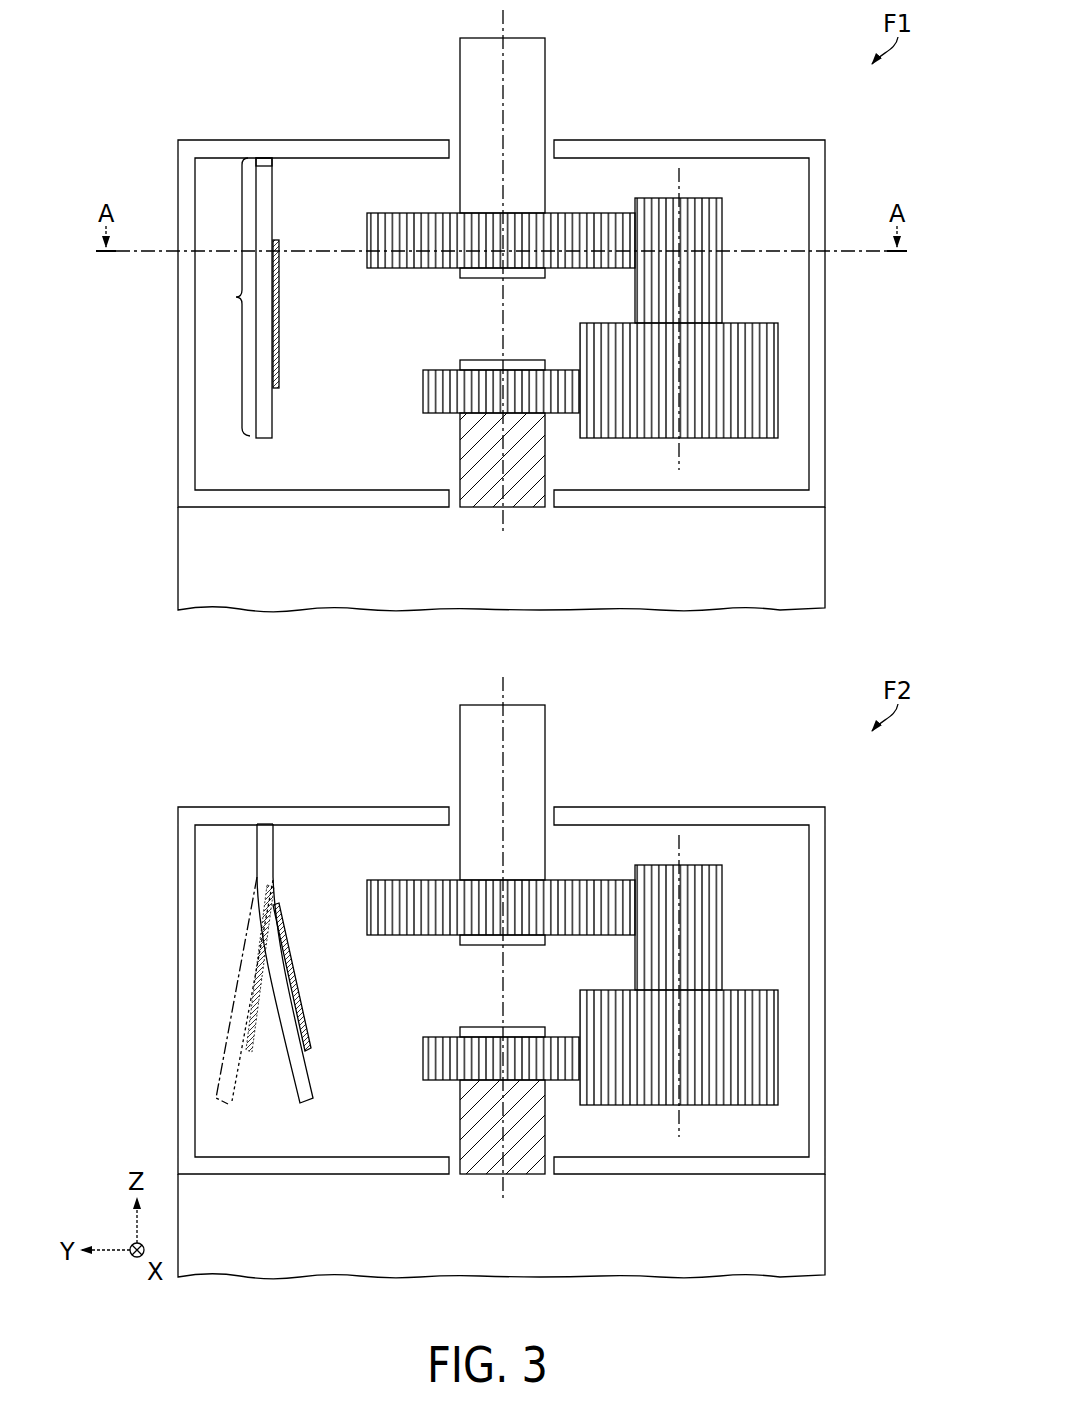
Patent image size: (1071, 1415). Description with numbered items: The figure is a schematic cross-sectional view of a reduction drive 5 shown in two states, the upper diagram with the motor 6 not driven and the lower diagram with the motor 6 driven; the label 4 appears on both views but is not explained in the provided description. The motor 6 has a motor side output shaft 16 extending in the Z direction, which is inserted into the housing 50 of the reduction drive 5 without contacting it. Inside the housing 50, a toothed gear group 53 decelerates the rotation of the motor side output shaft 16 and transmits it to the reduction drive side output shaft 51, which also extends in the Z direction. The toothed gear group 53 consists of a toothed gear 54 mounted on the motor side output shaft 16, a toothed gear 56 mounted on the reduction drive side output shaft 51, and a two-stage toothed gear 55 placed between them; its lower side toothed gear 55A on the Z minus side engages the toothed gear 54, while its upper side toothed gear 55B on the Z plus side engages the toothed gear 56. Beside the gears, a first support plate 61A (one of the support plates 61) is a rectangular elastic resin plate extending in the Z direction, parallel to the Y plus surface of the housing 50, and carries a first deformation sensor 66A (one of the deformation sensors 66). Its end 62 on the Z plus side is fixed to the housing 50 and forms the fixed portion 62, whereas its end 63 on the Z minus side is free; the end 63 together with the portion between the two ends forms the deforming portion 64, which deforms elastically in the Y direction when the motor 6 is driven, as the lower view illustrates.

The drive unit 4 is at (818, 118).
The reduction drive 5 is at (822, 188).
The motor 6 is at (822, 557).
The motor side output shaft 16 is at (460, 438).
The housing 50 is at (632, 146).
The reduction drive side output shaft 51 is at (460, 62).
The toothed gear group 53 is at (723, 182).
The toothed gear 54 is at (423, 380).
The two-stage toothed gear 55 is at (749, 651).
The lower side toothed gear 55A is at (679, 714).
The upper side toothed gear 55B is at (678, 594).
The toothed gear 56 is at (367, 218).
The contact member 61 is at (252, 701).
The first support plate 61A is at (252, 701).
The fixed portion 62 is at (264, 150).
The end 63 is at (268, 440).
The deforming portion 64 is at (262, 1105).
The contact portion 66 is at (345, 645).
The first deformation sensor 66A is at (280, 325).